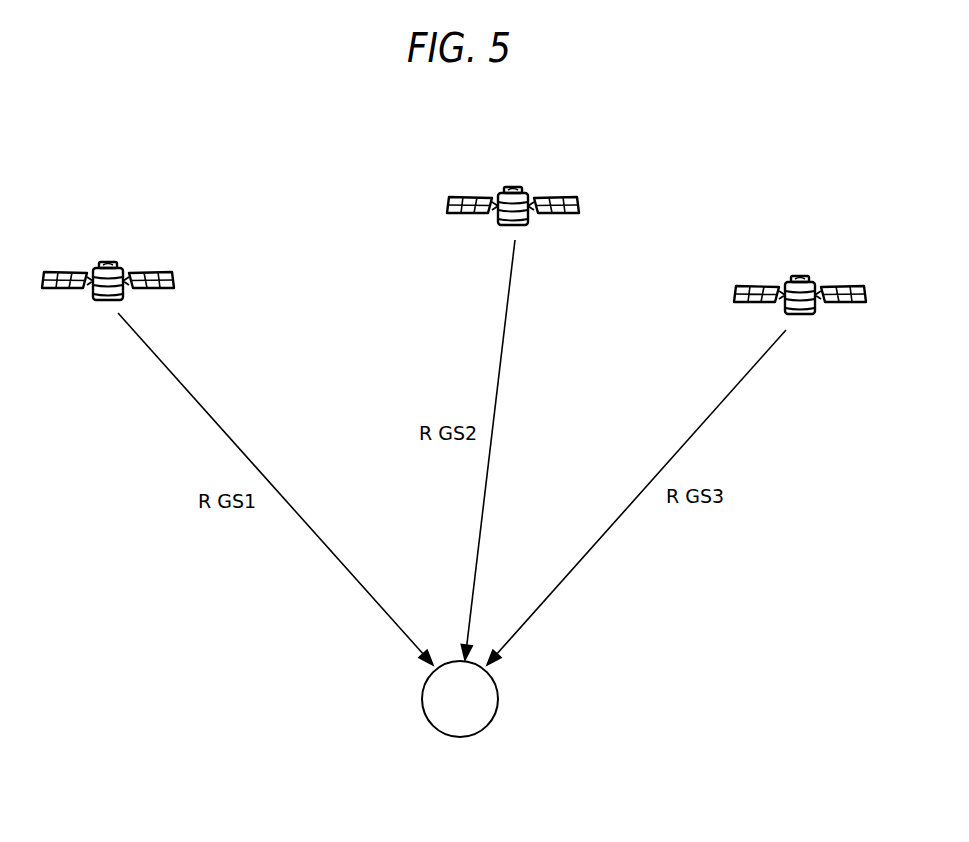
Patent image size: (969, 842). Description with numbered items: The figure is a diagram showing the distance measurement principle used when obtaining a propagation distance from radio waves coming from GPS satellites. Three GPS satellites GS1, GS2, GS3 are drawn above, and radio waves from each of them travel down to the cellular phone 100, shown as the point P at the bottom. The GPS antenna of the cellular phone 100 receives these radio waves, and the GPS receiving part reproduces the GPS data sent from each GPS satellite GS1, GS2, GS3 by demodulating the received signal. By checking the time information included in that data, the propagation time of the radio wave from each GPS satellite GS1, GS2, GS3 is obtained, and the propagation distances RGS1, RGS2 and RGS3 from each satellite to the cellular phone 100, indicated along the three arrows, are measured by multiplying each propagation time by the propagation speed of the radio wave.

The cellular phone 100 is at (498, 698).
The GPS satellite GS1 is at (108, 257).
The GPS satellite GS2 is at (513, 183).
The GPS satellite GS3 is at (800, 272).